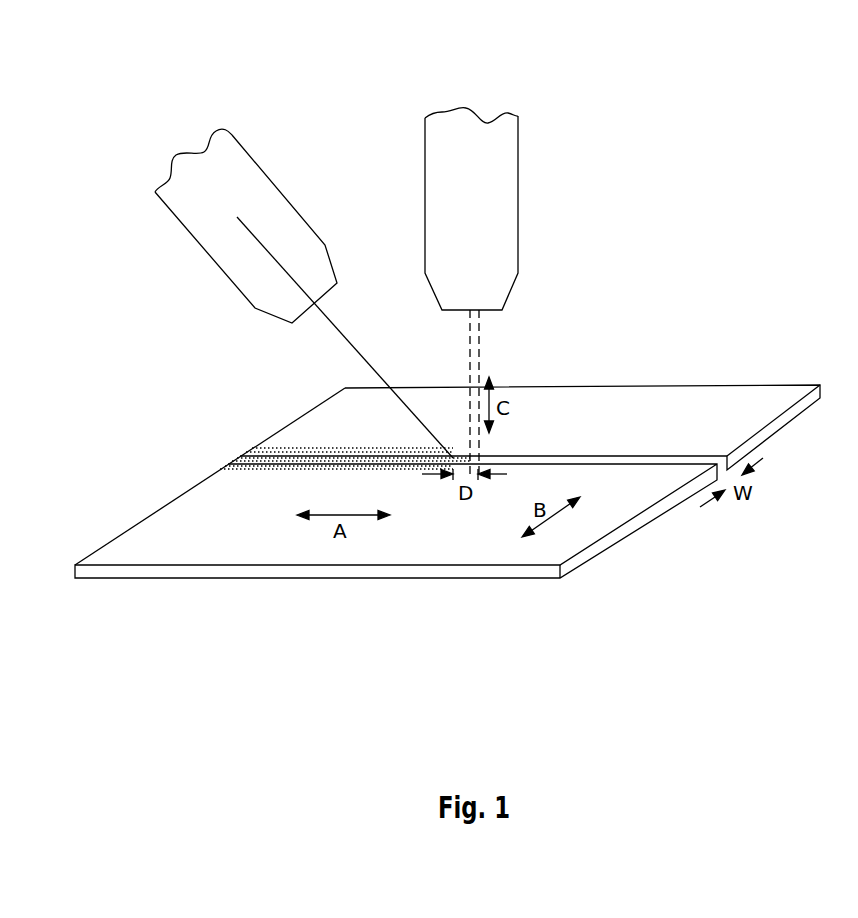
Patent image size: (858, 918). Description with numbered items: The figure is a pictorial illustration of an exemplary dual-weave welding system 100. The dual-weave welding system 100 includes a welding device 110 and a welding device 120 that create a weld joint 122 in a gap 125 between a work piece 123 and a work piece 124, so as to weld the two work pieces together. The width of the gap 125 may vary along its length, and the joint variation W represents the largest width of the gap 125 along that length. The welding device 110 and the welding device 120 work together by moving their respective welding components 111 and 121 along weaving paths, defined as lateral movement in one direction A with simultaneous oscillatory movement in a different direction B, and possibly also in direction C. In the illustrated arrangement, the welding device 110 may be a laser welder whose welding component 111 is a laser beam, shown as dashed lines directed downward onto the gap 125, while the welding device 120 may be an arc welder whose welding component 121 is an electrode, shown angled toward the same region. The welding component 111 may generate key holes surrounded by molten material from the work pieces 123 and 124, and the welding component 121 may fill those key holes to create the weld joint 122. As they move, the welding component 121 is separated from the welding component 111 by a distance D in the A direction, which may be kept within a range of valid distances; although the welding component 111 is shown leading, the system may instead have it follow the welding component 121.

The dual-weave welding system 100 is at (592, 109).
The welding device 110 is at (471, 209).
The welding component 111 is at (479, 347).
The welding device 120 is at (246, 226).
The welding component 121 is at (357, 352).
The weld joint 122 is at (283, 467).
The work piece 123 is at (653, 397).
The work piece 124 is at (628, 503).
The gap 125 is at (607, 458).